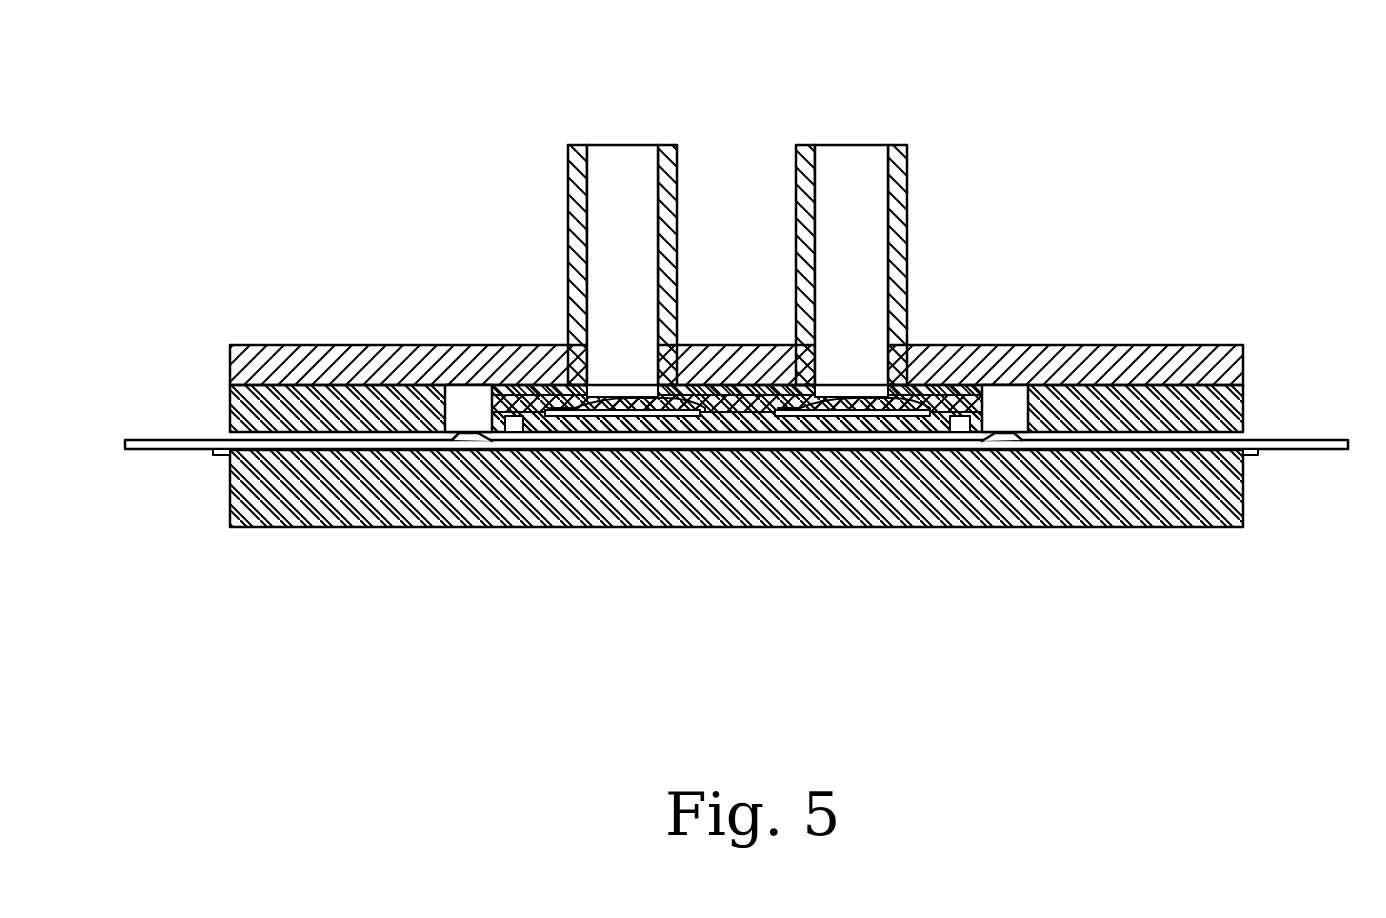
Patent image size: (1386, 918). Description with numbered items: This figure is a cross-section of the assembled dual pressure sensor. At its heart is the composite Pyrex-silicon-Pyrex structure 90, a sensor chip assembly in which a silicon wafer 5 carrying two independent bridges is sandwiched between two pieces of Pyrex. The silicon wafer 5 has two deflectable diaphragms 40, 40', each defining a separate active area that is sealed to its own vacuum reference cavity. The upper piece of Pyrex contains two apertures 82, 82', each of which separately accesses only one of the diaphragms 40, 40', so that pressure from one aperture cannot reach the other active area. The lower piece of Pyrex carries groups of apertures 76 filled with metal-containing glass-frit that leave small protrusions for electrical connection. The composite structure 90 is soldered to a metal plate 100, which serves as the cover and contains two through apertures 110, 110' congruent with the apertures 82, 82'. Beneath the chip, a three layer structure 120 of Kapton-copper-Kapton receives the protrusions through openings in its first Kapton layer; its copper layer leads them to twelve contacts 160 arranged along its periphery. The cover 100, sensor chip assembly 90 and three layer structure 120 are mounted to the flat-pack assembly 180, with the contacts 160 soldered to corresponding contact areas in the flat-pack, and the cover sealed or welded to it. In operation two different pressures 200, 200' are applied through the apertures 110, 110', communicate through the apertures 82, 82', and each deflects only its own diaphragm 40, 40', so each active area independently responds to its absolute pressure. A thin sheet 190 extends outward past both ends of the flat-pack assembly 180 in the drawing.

The silicon wafer 5 is at (545, 395).
The deflectable diaphragm 40 is at (624, 514).
The deflectable diaphragm 40' is at (852, 541).
The apertures 76 is at (517, 452).
The aperture 82 is at (610, 320).
The aperture 82' is at (905, 331).
The composite Pyrex-silicon-Pyrex structure 90 is at (481, 383).
The metal plate 100 is at (1243, 355).
The through aperture 110 is at (547, 257).
The through aperture 110' is at (931, 257).
The three layer structure 120 is at (1007, 426).
The contacts 160 is at (1025, 454).
The flat-pack assembly 180 is at (226, 510).
The sheet 190 is at (1290, 460).
The pressure 200 is at (684, 93).
The pressure 200' is at (920, 102).